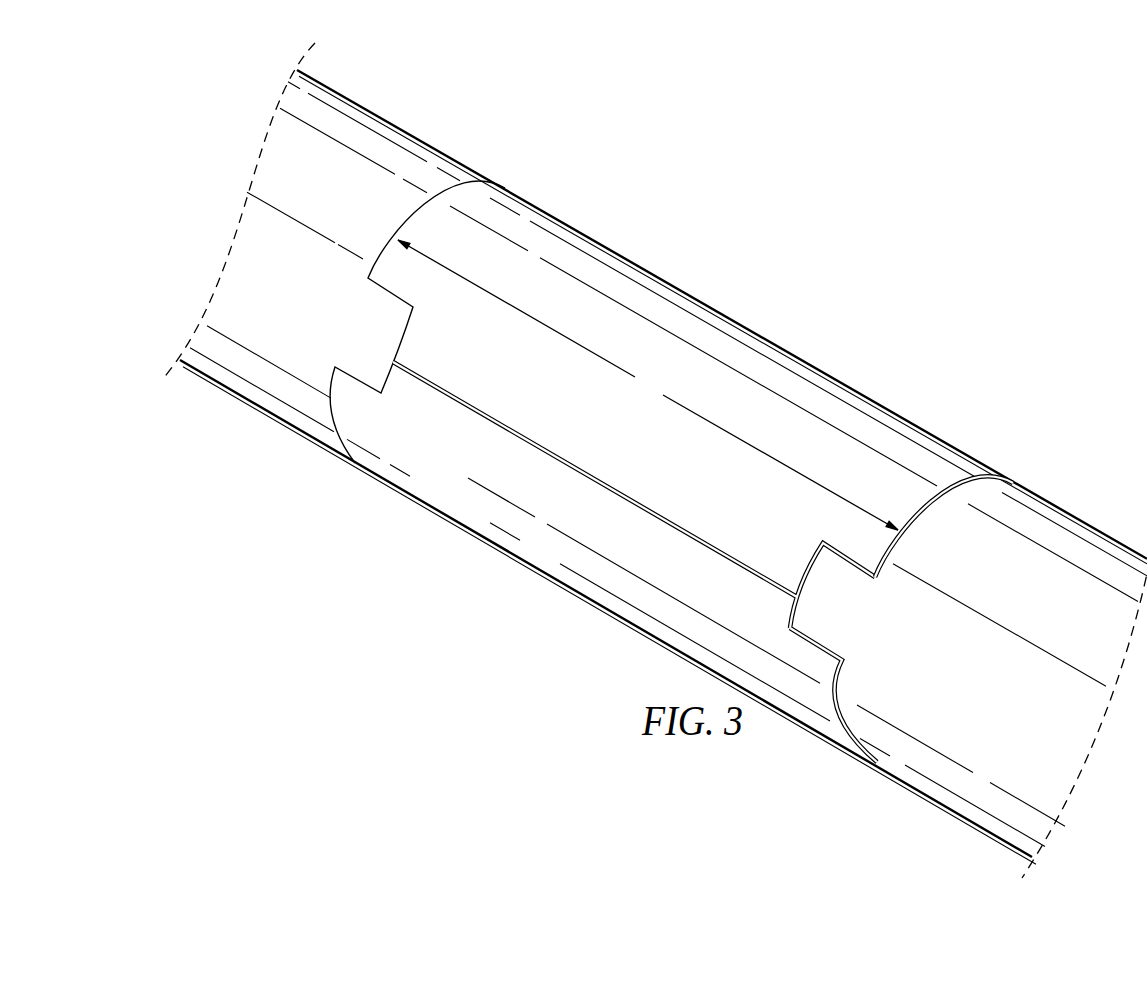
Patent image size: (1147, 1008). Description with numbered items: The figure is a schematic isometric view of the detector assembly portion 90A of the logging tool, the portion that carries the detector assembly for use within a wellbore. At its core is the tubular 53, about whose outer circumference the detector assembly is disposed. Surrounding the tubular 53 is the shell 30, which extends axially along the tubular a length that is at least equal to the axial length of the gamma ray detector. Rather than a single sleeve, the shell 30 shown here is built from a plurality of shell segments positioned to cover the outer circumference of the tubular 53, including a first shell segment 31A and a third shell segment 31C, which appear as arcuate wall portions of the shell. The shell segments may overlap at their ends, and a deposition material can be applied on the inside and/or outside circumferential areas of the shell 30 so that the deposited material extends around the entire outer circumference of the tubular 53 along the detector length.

The shell 30 is at (794, 325).
The first shell segment 31A is at (885, 420).
The third shell segment 31C is at (618, 603).
The detector assembly portion of the logging tool 90A is at (752, 212).
The tubular 53 is at (1040, 494).